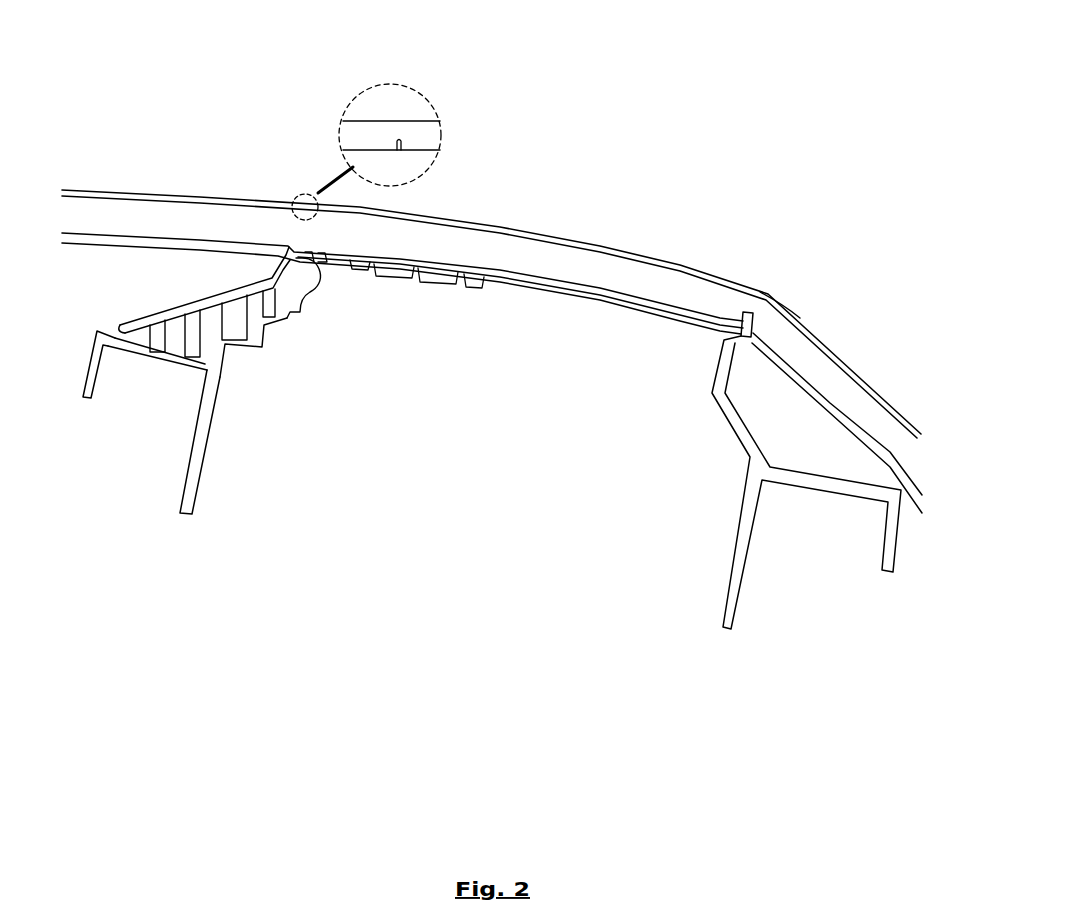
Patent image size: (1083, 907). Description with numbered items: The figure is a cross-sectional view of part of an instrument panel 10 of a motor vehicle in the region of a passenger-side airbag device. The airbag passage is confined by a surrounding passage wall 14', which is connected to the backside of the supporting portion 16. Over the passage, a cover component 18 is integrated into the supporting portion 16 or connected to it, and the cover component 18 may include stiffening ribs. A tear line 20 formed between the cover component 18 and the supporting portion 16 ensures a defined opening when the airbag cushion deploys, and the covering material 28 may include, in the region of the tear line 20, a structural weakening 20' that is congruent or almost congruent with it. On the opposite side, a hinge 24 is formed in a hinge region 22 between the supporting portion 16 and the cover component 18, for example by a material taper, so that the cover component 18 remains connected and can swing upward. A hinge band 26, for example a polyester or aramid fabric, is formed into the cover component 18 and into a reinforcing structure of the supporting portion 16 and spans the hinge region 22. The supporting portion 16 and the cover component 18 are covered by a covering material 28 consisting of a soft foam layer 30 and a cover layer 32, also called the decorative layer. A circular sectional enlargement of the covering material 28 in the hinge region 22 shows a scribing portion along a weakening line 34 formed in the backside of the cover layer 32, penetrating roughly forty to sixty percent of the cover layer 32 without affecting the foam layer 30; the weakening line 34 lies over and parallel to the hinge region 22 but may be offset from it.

The instrument panel 10 is at (710, 112).
The passage wall 14' is at (290, 380).
The supporting portion 16 is at (80, 245).
The cover component 18 is at (660, 320).
The tear line 20 is at (817, 463).
The structural weakening 20' is at (794, 264).
The hinge region 22 is at (296, 190).
The hinge 24 is at (298, 250).
The hinge band 26 is at (590, 302).
The covering material 28 is at (61, 70).
The foam layer 30 is at (70, 210).
The cover layer 32 is at (93, 190).
The weakening line 34 is at (402, 152).